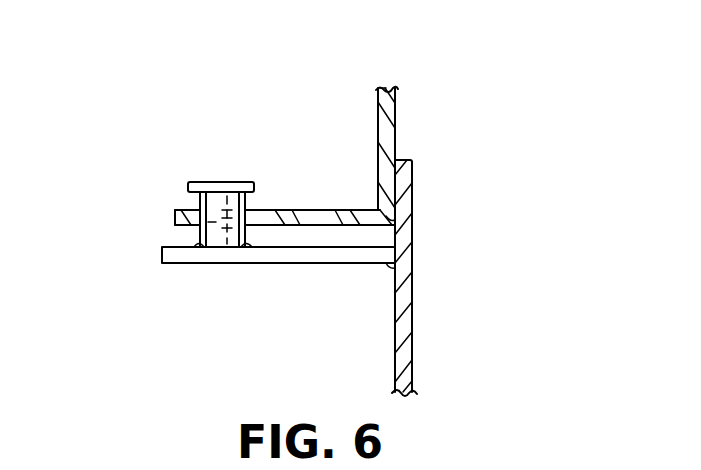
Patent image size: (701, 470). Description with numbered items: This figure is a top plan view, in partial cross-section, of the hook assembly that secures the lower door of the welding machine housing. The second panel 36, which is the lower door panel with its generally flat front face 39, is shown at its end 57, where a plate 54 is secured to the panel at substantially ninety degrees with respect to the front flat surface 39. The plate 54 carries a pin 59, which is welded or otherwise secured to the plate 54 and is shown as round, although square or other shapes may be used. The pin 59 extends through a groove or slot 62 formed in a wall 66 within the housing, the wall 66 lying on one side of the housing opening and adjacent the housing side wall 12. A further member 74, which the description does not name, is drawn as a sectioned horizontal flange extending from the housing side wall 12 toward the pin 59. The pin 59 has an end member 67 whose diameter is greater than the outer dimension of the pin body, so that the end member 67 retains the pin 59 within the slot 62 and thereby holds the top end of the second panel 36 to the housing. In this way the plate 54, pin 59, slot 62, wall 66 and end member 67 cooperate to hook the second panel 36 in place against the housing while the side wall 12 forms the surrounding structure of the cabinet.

The side wall 12 is at (395, 99).
The end of the panel 57 is at (407, 164).
The horizontal flange of angle bracket 74 is at (312, 211).
The plate 54 is at (320, 255).
The pin 59 is at (225, 244).
The slot 62 is at (215, 210).
The end member 67 is at (235, 182).
The wall 66 is at (173, 215).
The second panel 36 is at (413, 333).
The front flat face 39 is at (413, 370).